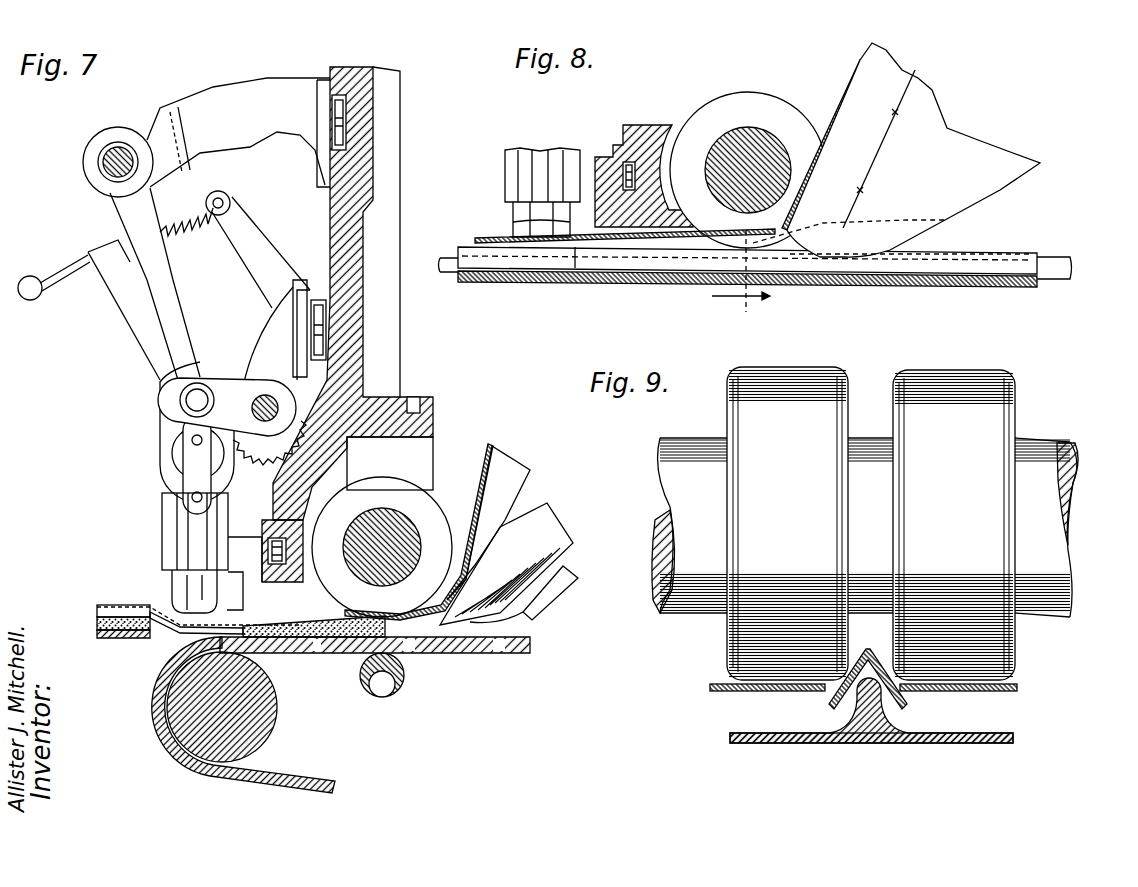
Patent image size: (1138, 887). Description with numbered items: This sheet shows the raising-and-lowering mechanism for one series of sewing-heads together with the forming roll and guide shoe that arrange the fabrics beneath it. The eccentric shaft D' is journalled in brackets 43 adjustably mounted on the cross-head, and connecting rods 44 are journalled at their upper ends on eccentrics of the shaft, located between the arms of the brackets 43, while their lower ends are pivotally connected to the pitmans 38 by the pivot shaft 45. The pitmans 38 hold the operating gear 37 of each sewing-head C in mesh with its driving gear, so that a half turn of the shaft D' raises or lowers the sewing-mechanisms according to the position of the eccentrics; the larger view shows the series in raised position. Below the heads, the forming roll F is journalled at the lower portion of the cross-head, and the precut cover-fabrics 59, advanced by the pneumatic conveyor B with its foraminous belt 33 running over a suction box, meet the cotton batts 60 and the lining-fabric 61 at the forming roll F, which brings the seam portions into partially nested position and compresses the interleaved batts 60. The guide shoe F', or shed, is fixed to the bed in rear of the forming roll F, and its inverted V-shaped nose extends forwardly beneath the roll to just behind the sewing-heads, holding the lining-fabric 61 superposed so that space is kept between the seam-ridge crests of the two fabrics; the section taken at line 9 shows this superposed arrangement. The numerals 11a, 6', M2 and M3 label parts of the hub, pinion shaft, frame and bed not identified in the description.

In FIG. 7, the bracket 43 is at (216, 96).
In FIG. 7, the lever hub 11a is at (100, 148).
In FIG. 7, the eccentric shaft D' is at (87, 169).
In FIG. 7, the connecting rod 44 is at (168, 297).
In FIG. 7, the pivot shaft 45 is at (190, 402).
In FIG. 7, the pitman 38 is at (233, 383).
In FIG. 7, the pinion shaft 6' is at (265, 387).
In FIG. 7, the operating gear 37 is at (258, 445).
In FIG. 7, the sewing-head C is at (162, 522).
In FIG. 8, the sewing-head C is at (505, 165).
In FIG. 7, the frame M2 is at (400, 113).
In FIG. 8, the frame M2 is at (648, 126).
In FIG. 7, the forming roll F is at (382, 535).
In FIG. 8, the forming roll F is at (748, 157).
In FIG. 9, the forming roll F is at (888, 523).
In FIG. 7, the lining-fabric 61 is at (487, 488).
In FIG. 8, the lining-fabric 61 is at (848, 92).
In FIG. 9, the lining-fabric 61 is at (1018, 688).
In FIG. 7, the guide shoe F' is at (512, 535).
In FIG. 8, the guide shoe F' is at (822, 177).
In FIG. 9, the guide shoe F' is at (838, 682).
In FIG. 7, the cotton batt 60 is at (542, 527).
In FIG. 7, the cover-fabric 59 is at (110, 637).
In FIG. 8, the cover-fabric 59 is at (970, 285).
In FIG. 9, the cover-fabric 59 is at (993, 733).
In FIG. 7, the foraminous belt 33 is at (310, 780).
In FIG. 7, the pneumatic conveyor B is at (470, 655).
In FIG. 8, the shaft M3 is at (1052, 260).
In FIG. 9, the shaft M3 is at (873, 743).
In FIG. 8, the section line 9 is at (741, 274).